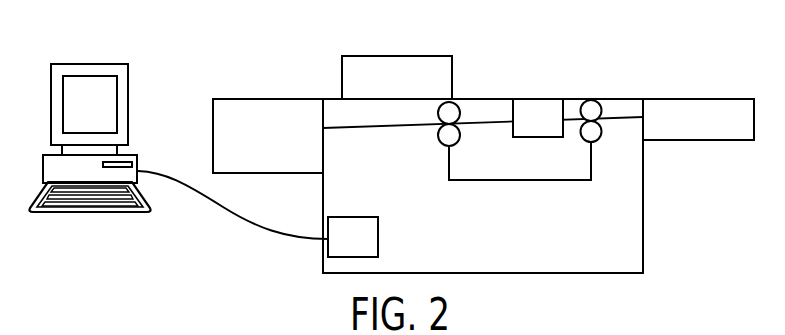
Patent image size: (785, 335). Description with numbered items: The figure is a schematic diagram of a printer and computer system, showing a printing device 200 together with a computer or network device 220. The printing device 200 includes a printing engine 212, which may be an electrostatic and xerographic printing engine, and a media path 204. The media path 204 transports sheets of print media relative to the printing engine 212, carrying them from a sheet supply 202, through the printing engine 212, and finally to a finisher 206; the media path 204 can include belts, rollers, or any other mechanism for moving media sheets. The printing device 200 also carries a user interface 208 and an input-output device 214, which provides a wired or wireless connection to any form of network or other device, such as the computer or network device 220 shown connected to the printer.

The printing device 200 is at (323, 191).
The sheet supply 202 is at (227, 108).
The transport rollers (nips) 204 is at (399, 139).
The finisher 206 is at (702, 102).
The interface 208 is at (418, 63).
The marking engine 212 is at (552, 132).
The controller 214 is at (365, 249).
The computer 220 is at (122, 63).